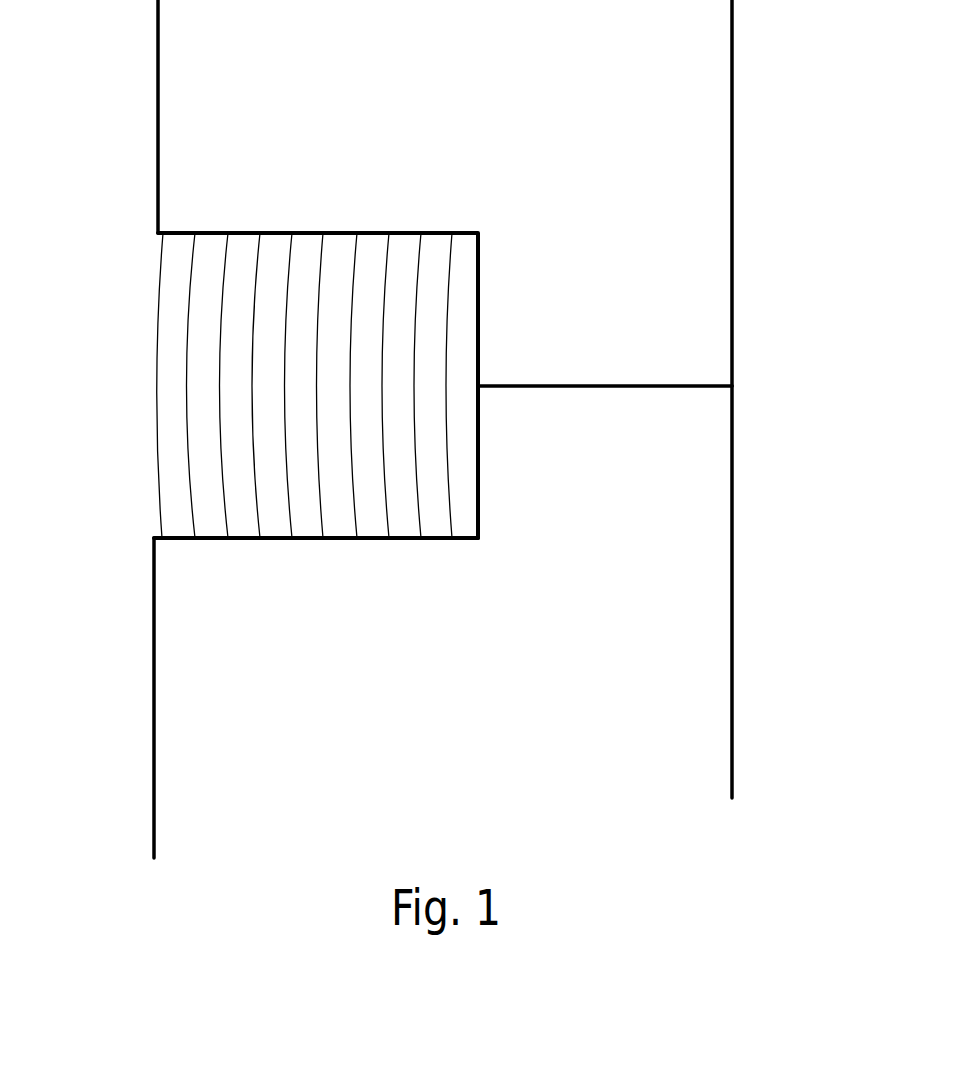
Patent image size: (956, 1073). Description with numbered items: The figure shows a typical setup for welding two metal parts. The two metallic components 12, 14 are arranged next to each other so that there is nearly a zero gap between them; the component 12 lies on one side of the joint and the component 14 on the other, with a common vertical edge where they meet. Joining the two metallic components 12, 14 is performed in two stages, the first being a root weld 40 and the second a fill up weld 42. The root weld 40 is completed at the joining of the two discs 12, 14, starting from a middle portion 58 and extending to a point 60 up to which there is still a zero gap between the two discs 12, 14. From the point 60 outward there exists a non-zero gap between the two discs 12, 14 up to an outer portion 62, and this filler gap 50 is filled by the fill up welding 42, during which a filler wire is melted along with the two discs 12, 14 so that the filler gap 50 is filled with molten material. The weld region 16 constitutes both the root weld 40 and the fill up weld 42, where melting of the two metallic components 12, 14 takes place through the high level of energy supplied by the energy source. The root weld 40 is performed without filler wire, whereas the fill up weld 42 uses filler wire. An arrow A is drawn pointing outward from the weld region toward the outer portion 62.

The metallic component 12 is at (697, 72).
The metallic component 14 is at (658, 669).
The weld region 16 is at (420, 490).
The root weld 40 is at (657, 375).
The fill up weld 42 is at (230, 390).
The filler gap 50 is at (403, 298).
The middle portion 58 is at (735, 383).
The point 60 is at (480, 385).
The outer portion 62 is at (157, 425).
The direction arrow A is at (188, 386).